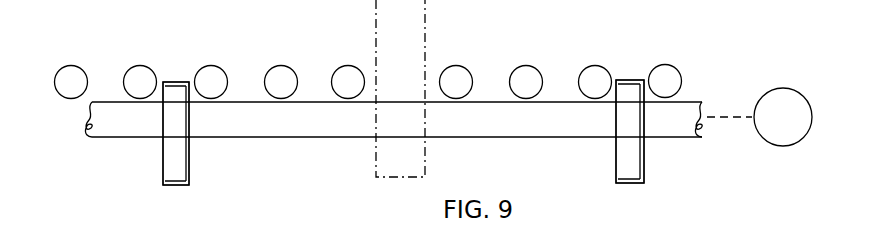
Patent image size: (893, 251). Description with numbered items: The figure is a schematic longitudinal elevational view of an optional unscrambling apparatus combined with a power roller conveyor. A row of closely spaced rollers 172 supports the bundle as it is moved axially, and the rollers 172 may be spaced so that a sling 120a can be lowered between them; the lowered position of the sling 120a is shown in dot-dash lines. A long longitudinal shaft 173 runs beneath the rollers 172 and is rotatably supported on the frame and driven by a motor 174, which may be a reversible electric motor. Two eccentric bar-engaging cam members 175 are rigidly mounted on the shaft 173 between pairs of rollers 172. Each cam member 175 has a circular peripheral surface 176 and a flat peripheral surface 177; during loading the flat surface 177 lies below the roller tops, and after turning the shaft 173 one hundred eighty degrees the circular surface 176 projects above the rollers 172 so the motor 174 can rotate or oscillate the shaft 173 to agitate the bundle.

The rollers 172 is at (138, 78).
The longitudinal shaft 173 is at (450, 125).
The motor 174 is at (776, 137).
The eccentric bar-engaging member 175 is at (170, 170).
The circular peripheral surface 176 is at (623, 186).
The flat peripheral surface 177 is at (183, 82).
The sling 120a is at (373, 38).